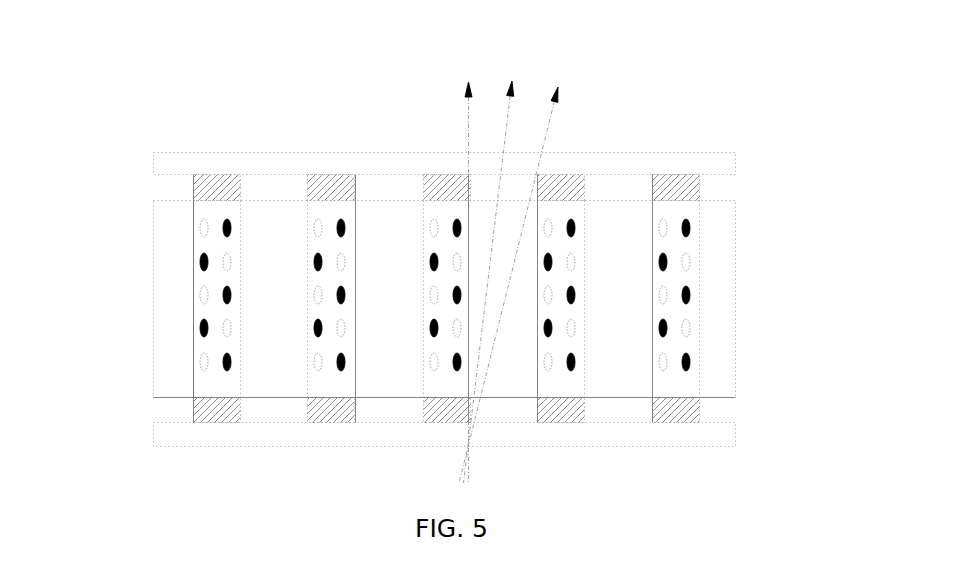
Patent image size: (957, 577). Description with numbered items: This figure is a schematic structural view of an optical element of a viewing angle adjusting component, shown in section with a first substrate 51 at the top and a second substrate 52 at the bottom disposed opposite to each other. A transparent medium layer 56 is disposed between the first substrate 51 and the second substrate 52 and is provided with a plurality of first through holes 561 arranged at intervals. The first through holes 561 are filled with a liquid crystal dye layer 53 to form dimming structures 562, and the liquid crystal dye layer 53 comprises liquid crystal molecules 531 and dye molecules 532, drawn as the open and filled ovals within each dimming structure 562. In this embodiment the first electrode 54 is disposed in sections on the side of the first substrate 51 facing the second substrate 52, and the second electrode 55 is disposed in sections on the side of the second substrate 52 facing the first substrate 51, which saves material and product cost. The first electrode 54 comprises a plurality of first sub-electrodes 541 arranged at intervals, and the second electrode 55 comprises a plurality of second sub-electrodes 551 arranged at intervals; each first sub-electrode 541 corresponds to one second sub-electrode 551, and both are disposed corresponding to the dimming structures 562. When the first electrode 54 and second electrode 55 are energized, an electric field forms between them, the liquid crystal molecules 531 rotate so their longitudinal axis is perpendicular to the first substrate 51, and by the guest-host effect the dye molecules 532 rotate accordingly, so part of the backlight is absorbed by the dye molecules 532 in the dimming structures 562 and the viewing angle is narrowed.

The first substrate 51 is at (722, 172).
The second substrate 52 is at (720, 440).
The liquid crystal dye layer 53 is at (815, 245).
The liquid crystal molecules 531 is at (690, 259).
The dye molecules 532 is at (690, 289).
The first electrode 54 is at (368, 175).
The first sub-electrodes 541 is at (204, 187).
The second electrode 55 is at (386, 396).
The second sub-electrodes 551 is at (204, 408).
The transparent medium layer 56 is at (173, 328).
The first through holes 561 is at (683, 383).
The dimming structure 562 is at (183, 275).